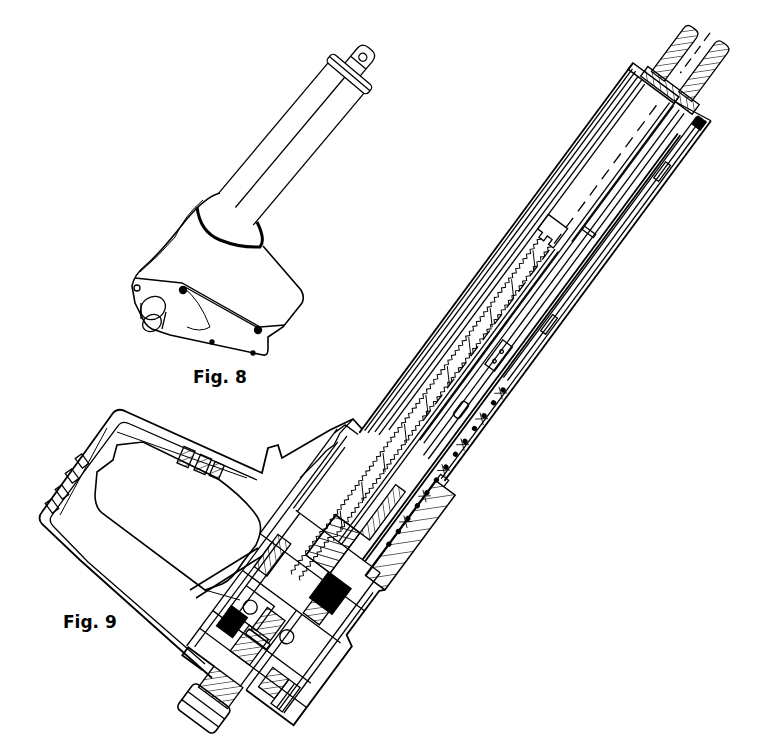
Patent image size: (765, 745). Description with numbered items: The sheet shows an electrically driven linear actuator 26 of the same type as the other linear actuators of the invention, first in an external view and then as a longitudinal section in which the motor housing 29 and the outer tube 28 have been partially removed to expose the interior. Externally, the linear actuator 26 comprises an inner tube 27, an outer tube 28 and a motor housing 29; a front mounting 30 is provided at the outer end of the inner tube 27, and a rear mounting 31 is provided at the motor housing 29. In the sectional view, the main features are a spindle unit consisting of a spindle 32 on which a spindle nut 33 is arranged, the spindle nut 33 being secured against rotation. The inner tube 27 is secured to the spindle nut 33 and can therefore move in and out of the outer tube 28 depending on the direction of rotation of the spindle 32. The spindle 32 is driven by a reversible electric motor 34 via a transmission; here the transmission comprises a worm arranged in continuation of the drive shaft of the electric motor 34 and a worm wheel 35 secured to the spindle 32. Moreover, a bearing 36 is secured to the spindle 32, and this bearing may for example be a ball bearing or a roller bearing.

In FIG. 8, the linear actuator 26 is at (258, 93).
In FIG. 9, the linear actuator 26 is at (564, 441).
In FIG. 8, the inner tube 27 is at (355, 60).
In FIG. 9, the inner tube 27 is at (558, 165).
In FIG. 8, the outer tube 28 is at (260, 153).
In FIG. 9, the outer tube 28 is at (497, 247).
In FIG. 8, the motor housing 29 is at (159, 246).
In FIG. 9, the motor housing 29 is at (133, 408).
In FIG. 8, the front mounting 30 is at (378, 48).
In FIG. 9, the front mounting 30 is at (672, 45).
In FIG. 8, the rear mounting 31 is at (146, 326).
In FIG. 9, the rear mounting 31 is at (193, 695).
In FIG. 9, the spindle 32 is at (588, 274).
In FIG. 9, the spindle nut 33 is at (366, 546).
In FIG. 9, the reversible electric motor 34 is at (113, 467).
In FIG. 9, the worm wheel 35 is at (318, 627).
In FIG. 9, the bearing 36 is at (313, 657).